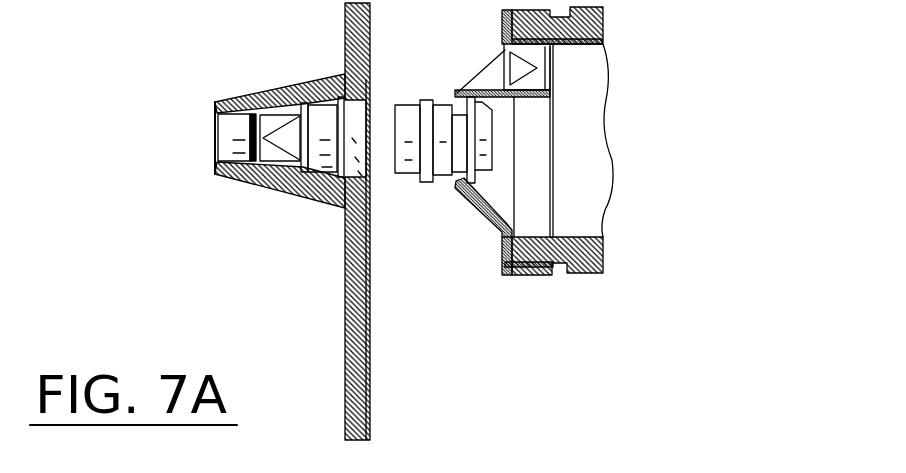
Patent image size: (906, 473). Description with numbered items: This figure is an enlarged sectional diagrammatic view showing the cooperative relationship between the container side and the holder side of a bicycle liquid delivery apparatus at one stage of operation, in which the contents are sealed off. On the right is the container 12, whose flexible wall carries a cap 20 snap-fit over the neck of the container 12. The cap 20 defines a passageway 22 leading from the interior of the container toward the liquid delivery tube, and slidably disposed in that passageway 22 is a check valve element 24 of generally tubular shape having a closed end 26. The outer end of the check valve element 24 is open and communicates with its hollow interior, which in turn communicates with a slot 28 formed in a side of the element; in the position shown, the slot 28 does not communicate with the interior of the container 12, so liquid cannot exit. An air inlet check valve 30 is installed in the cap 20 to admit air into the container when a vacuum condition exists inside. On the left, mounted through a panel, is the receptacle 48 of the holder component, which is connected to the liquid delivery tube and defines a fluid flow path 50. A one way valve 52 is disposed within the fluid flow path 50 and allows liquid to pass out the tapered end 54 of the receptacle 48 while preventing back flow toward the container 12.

The container 12 is at (573, 273).
The cap 20 is at (472, 202).
The passageway 22 is at (472, 110).
The check valve element 24 is at (400, 123).
The closed end 26 is at (490, 137).
The slot 28 is at (455, 157).
The air inlet check valve 30 is at (503, 72).
The receptacle 48 is at (267, 185).
The fluid flow path 50 is at (325, 127).
The one way valve 52 is at (290, 97).
The tapered end 54 is at (228, 125).